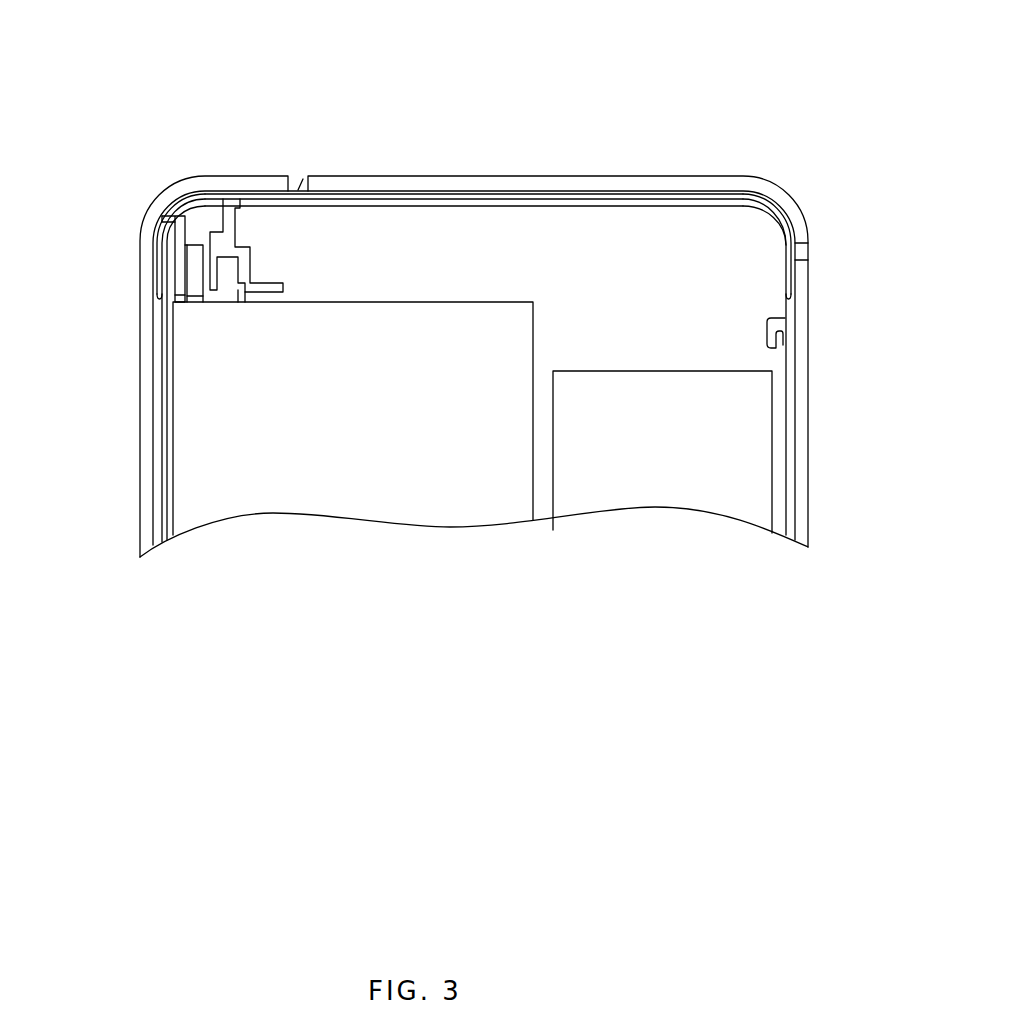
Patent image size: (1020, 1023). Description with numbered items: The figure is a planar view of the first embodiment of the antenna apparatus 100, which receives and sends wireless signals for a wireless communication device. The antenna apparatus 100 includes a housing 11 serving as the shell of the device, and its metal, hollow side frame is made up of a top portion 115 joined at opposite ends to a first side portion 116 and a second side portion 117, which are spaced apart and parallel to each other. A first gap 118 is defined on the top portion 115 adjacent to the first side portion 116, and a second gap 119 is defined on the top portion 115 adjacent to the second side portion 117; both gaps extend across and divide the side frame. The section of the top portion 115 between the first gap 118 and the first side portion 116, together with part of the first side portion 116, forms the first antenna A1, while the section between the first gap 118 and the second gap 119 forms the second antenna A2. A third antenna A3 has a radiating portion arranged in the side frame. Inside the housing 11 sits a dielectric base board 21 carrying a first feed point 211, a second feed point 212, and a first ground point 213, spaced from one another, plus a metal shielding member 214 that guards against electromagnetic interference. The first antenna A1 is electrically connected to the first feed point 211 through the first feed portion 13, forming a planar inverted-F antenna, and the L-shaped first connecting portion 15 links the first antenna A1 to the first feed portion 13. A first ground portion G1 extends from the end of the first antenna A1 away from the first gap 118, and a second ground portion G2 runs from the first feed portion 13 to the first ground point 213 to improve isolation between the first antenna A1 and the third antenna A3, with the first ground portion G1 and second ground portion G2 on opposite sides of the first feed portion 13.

The antenna apparatus 100 is at (498, 32).
The housing 11 is at (270, 103).
The first antenna A1 is at (250, 183).
The second antenna A2 is at (352, 182).
The third antenna A3 is at (250, 255).
The top portion 115 is at (680, 188).
The first side portion 116 is at (140, 433).
The second side portion 117 is at (806, 303).
The first gap 118 is at (175, 222).
The second gap 119 is at (798, 254).
The first connecting portion 15 is at (165, 221).
The first feed portion 13 is at (190, 263).
The first ground portion G1 is at (160, 291).
The second ground portion G2 is at (186, 250).
The base board 21 is at (725, 341).
The first feed point 211 is at (180, 300).
The second feed point 212 is at (242, 301).
The first ground point 213 is at (205, 301).
The metal shielding member 214 is at (750, 410).